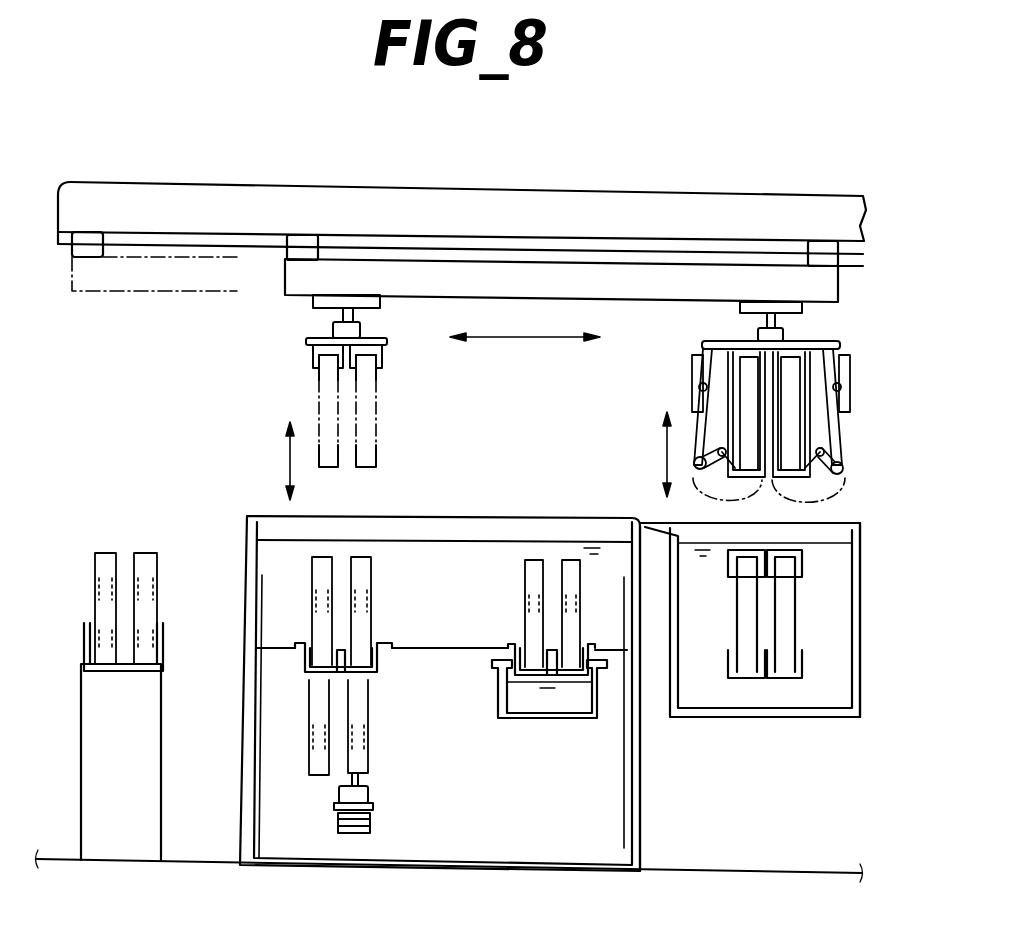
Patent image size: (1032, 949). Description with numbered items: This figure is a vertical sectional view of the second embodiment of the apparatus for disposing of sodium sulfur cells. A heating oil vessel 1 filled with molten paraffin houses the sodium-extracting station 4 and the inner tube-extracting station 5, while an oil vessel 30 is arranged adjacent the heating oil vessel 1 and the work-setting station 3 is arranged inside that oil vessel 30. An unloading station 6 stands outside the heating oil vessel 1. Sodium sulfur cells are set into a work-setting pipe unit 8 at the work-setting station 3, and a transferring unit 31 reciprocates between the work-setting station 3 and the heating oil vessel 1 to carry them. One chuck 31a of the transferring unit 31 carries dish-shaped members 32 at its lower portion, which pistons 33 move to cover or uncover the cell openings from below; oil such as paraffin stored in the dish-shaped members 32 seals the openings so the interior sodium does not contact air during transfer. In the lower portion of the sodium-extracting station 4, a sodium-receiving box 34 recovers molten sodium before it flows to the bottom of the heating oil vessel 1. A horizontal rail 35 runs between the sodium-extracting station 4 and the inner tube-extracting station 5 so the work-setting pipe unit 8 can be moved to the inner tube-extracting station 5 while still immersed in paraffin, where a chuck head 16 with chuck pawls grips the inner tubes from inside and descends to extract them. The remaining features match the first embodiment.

The heating oil vessel 1 is at (640, 776).
The work-setting station 3 is at (828, 565).
The sodium-extracting station 4 is at (557, 512).
The inner tube-extracting station 5 is at (360, 513).
The unloading station 6 is at (130, 540).
The work-setting pipe unit 8 is at (375, 635).
The chuck head 16 is at (372, 796).
The oil vessel 30 is at (862, 596).
The transferring unit 31 is at (830, 293).
The chuck 31a is at (823, 356).
The dish-shaped member 32 is at (787, 465).
The piston 33 is at (850, 372).
The sodium-receiving box 34 is at (547, 720).
The horizontal rail 35 is at (432, 652).